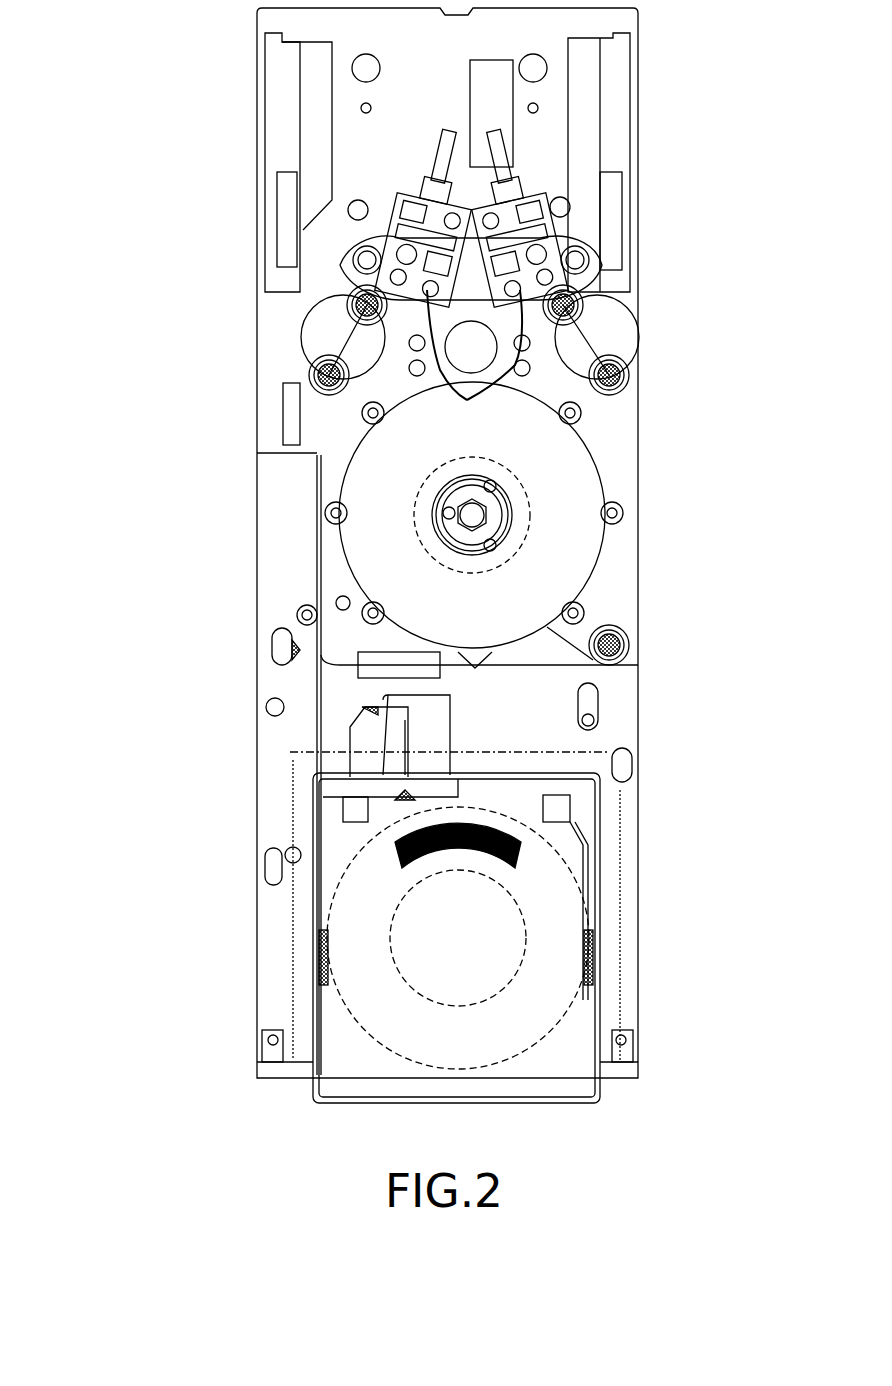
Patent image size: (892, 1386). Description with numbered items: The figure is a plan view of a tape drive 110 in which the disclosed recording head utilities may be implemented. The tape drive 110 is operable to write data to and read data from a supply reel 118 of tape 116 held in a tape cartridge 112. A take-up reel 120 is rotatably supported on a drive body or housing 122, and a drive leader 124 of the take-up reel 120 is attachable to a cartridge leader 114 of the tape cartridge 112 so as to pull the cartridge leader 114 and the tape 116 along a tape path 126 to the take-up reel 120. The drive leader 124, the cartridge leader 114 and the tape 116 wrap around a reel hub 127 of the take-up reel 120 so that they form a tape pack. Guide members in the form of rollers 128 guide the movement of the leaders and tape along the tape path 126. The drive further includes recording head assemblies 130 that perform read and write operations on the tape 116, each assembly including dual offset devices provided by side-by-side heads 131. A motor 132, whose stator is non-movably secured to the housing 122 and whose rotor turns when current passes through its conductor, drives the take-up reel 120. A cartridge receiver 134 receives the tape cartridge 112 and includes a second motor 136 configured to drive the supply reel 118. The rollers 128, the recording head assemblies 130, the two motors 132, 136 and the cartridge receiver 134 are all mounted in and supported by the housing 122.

The tape drive 110 is at (163, 626).
The tape cartridge 112 is at (535, 1103).
The cartridge leader 114 is at (315, 748).
The tape 116 is at (515, 830).
The supply reel 118 is at (580, 870).
The take-up reel 120 is at (606, 478).
The drive body or housing 122 is at (257, 430).
The drive leader 124 is at (316, 668).
The tape path 126 is at (310, 703).
The reel hub 127 is at (530, 475).
The rollers 128 is at (322, 372).
The recording head assemblies 130 is at (478, 237).
The side-by-side heads 131 is at (474, 359).
The motor 132 is at (545, 535).
The cartridge receiver 134 is at (607, 752).
The motor 136 is at (525, 922).